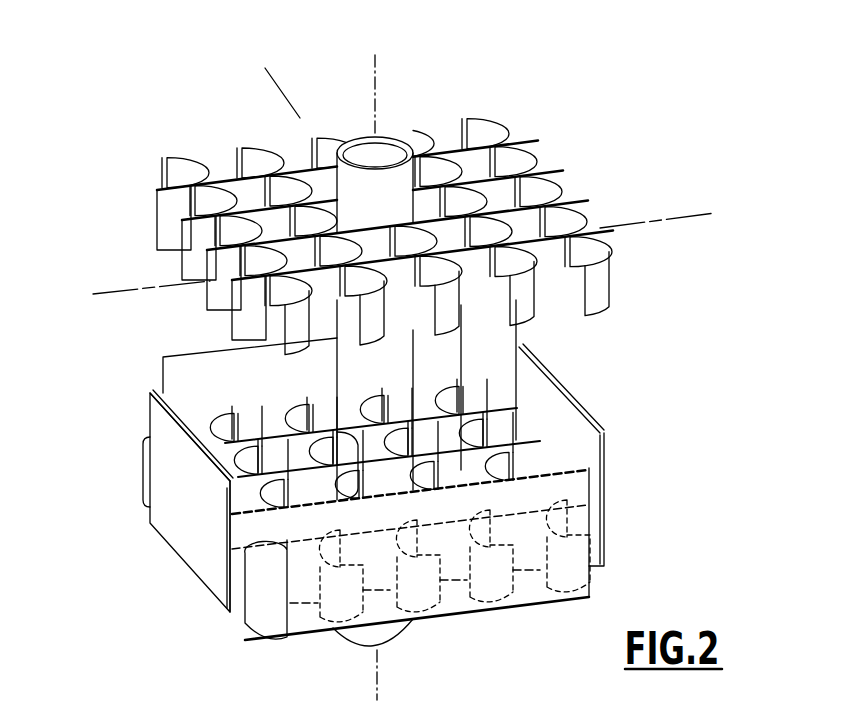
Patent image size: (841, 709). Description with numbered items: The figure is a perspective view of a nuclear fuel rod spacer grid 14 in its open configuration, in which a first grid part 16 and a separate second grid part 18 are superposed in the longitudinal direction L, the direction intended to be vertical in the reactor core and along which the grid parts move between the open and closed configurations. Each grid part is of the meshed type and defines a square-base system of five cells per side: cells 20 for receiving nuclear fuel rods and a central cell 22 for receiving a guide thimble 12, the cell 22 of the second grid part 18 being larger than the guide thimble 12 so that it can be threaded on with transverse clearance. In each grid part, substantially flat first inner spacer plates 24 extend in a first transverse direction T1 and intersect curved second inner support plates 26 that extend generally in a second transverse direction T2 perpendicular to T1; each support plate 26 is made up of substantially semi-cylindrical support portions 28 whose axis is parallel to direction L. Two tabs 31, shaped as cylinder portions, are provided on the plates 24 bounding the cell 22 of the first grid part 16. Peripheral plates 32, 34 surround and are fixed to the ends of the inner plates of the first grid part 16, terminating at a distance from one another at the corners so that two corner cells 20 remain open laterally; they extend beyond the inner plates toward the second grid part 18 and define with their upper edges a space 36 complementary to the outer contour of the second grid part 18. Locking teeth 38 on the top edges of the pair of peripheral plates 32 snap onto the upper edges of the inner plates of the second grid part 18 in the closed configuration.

The guide thimble 12 is at (393, 637).
The grid 14 is at (183, 57).
The first grid part 16 is at (97, 481).
The second grid part 18 is at (100, 256).
The cells 20 is at (158, 186).
The cell 22 is at (318, 214).
The first inner spacer plates 24 is at (545, 160).
The second inner support plates 26 is at (166, 157).
The semi-cylindrical support portions 28 is at (610, 264).
The tabs 31 is at (352, 462).
The peripheral plates 32 is at (177, 497).
The peripheral plates 34 is at (190, 372).
The space 36 is at (316, 397).
The locking teeth 38 is at (247, 496).
The first transverse direction T1 is at (403, 254).
The second transverse direction T2 is at (269, 80).
The longitudinal direction L is at (375, 90).